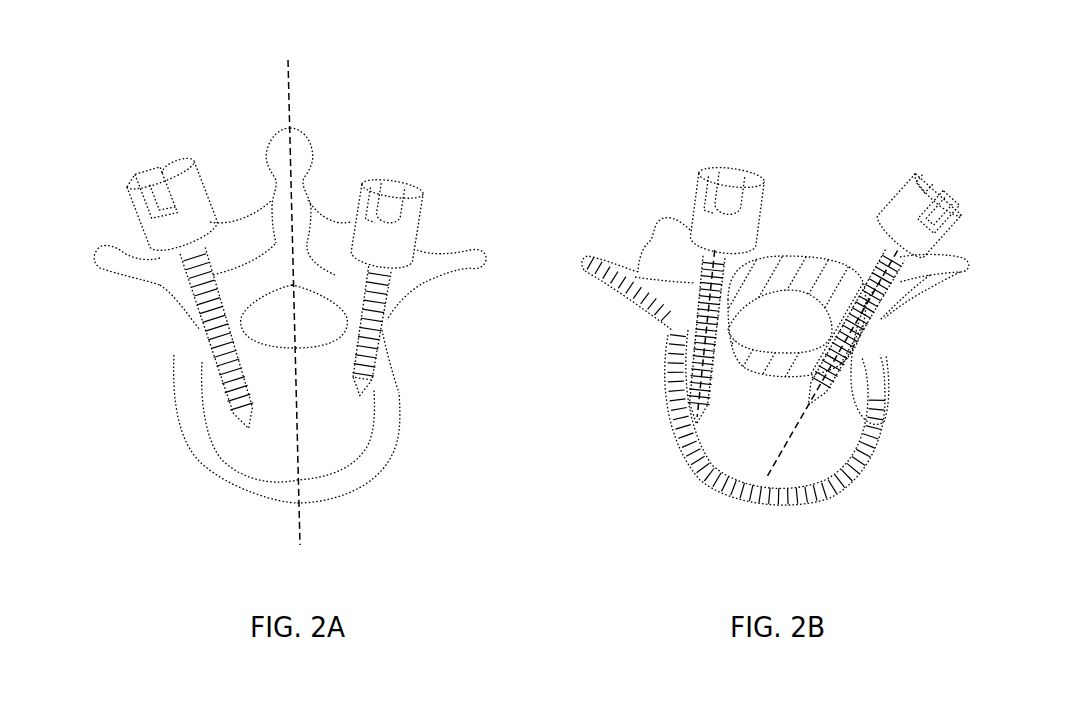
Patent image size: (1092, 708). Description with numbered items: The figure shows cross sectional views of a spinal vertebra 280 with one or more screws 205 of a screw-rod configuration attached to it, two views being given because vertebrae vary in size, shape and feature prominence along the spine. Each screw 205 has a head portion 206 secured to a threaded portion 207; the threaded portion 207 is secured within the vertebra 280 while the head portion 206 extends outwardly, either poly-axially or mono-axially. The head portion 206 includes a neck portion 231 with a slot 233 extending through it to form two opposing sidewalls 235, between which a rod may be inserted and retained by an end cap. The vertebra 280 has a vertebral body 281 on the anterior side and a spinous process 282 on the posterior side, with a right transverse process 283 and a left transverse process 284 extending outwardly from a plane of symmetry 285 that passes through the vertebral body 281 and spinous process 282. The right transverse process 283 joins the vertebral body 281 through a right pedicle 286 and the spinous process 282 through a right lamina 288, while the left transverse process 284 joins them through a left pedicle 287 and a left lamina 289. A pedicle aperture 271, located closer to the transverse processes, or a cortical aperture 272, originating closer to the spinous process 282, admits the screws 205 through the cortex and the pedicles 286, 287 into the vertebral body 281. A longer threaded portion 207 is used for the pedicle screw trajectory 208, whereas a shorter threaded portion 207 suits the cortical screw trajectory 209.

In FIG. 2A, the screw 205 is at (446, 266).
In FIG. 2A, the head portion 206 is at (390, 183).
In FIG. 2A, the threaded portion 207 is at (368, 362).
In FIG. 2A, the right pedicle 286 is at (380, 333).
In FIG. 2A, the vertebra 280 is at (308, 311).
In FIG. 2B, the vertebra 280 is at (814, 367).
In FIG. 2A, the vertebral body 281 is at (218, 467).
In FIG. 2A, the spinous process 282 is at (298, 150).
In FIG. 2A, the right transverse process 283 is at (473, 257).
In FIG. 2A, the left transverse process 284 is at (118, 273).
In FIG. 2A, the plane of symmetry 285 is at (288, 73).
In FIG. 2A, the left pedicle 287 is at (197, 327).
In FIG. 2A, the right lamina 288 is at (173, 256).
In FIG. 2A, the left lamina 289 is at (250, 277).
In FIG. 2B, the neck portion 231 is at (898, 357).
In FIG. 2B, the slot 233 is at (928, 180).
In FIG. 2B, the opposing sidewalls 235 is at (915, 195).
In FIG. 2B, the pedicle aperture 271 is at (860, 353).
In FIG. 2B, the cortical aperture 272 is at (718, 350).
In FIG. 2B, the screw trajectory 208 is at (767, 475).
In FIG. 2B, the screw trajectory 209 is at (692, 413).